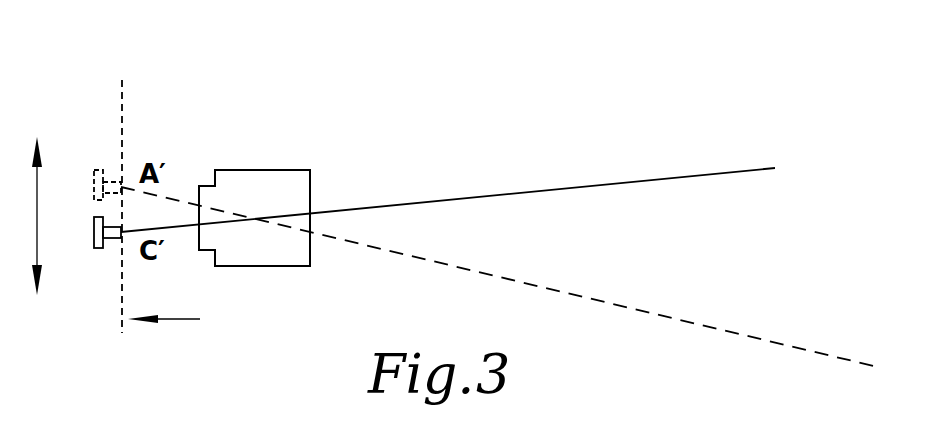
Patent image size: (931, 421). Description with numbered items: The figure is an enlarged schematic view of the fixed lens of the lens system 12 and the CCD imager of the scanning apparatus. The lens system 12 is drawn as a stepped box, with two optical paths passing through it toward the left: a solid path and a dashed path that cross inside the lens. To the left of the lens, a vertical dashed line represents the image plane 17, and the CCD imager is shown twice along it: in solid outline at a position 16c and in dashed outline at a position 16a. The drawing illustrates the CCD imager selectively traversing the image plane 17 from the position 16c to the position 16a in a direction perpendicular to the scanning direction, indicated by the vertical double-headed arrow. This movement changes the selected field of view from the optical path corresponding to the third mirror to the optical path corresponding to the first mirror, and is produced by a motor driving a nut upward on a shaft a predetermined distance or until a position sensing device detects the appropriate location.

The lens system 12 is at (247, 170).
The position of the CCD imager 16a is at (88, 145).
The position of the CCD imager 16c is at (98, 278).
The image plane 17 is at (130, 72).